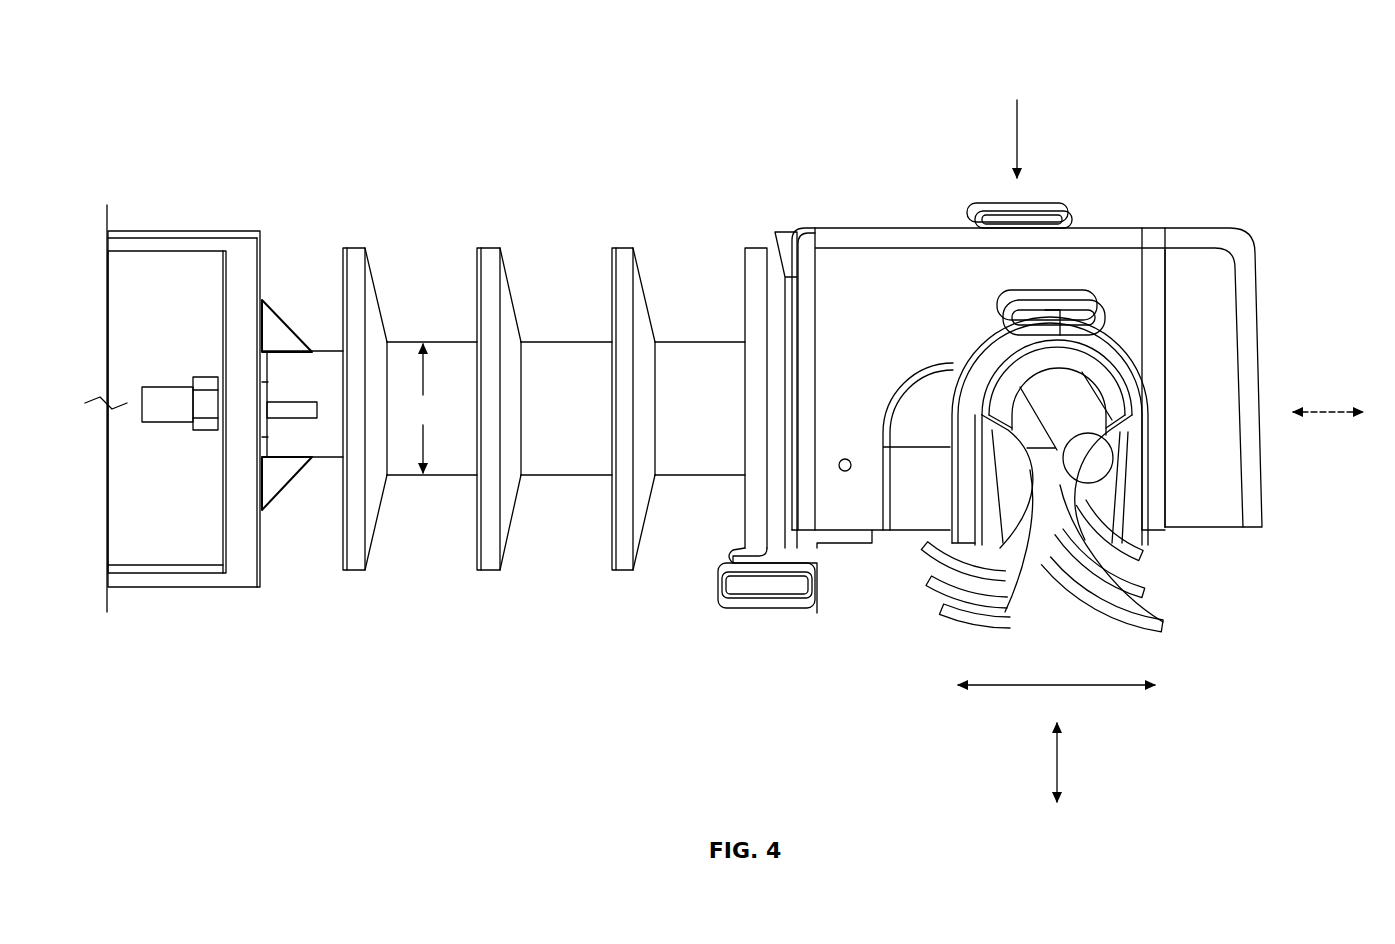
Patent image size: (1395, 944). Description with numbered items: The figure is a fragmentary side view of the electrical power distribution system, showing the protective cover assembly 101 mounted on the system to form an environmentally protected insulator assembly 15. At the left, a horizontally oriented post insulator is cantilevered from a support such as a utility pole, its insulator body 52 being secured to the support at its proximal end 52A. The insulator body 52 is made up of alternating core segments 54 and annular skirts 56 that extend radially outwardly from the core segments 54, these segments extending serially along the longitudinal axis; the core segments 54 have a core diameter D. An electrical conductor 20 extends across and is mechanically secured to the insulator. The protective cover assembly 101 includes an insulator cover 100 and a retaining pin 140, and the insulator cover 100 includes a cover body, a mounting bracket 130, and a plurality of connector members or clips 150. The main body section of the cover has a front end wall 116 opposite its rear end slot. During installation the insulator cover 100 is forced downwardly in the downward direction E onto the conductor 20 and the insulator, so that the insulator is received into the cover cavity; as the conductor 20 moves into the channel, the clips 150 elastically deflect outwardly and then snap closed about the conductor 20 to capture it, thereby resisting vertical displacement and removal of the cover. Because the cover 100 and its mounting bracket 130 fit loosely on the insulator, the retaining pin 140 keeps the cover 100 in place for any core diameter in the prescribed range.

The insulator assembly 15 is at (638, 127).
The electrical conductor 20 is at (1090, 457).
The insulator body 52 is at (463, 540).
The proximal end 52A is at (325, 448).
The core segments 54 is at (698, 355).
The annular skirts 56 is at (620, 247).
The insulator cover 100 is at (1105, 220).
The protective cover assembly 101 is at (1250, 103).
The front end wall 116 is at (1258, 335).
The mounting bracket 130 is at (802, 550).
The retaining pin 140 is at (765, 587).
The clips 150 is at (1147, 628).